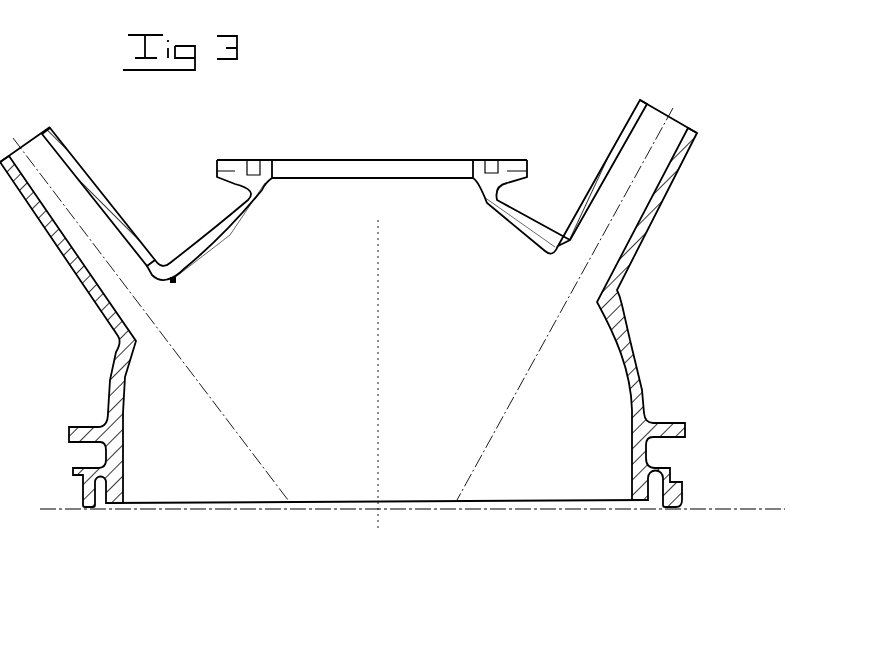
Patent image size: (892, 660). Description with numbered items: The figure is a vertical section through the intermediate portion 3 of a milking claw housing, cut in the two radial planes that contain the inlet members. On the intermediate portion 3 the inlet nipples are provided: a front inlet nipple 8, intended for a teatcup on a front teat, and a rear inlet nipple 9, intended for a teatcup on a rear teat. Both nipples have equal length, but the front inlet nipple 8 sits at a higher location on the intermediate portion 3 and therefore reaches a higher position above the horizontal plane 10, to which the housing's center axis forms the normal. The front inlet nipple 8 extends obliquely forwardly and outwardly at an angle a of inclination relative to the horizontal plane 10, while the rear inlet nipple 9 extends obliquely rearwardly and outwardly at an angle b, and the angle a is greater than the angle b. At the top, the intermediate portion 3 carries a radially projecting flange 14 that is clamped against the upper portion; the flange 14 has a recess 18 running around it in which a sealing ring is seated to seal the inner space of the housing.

The intermediate portion 3 is at (625, 352).
The front inlet nipple 8 is at (667, 194).
The rear inlet nipple 9 is at (86, 178).
The horizontal plane 10 is at (737, 503).
The radially projecting flange 14 is at (517, 156).
The recess 18 is at (490, 158).
The angle of inclination a is at (469, 470).
The angle of inclination b is at (268, 469).